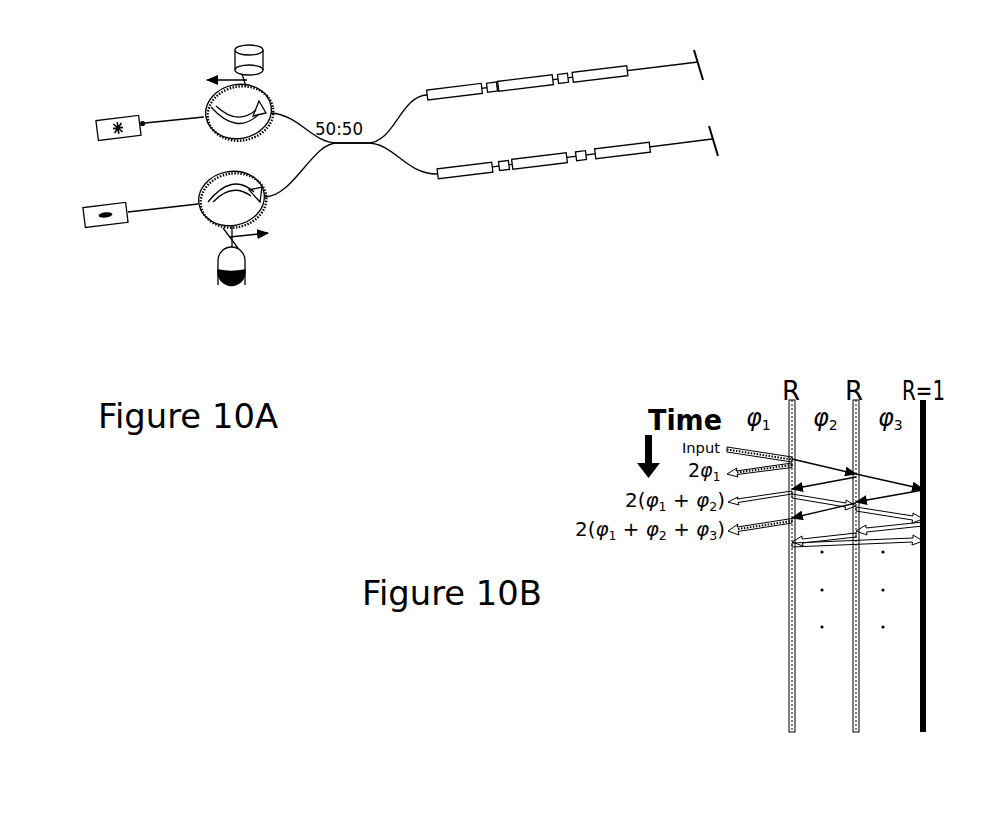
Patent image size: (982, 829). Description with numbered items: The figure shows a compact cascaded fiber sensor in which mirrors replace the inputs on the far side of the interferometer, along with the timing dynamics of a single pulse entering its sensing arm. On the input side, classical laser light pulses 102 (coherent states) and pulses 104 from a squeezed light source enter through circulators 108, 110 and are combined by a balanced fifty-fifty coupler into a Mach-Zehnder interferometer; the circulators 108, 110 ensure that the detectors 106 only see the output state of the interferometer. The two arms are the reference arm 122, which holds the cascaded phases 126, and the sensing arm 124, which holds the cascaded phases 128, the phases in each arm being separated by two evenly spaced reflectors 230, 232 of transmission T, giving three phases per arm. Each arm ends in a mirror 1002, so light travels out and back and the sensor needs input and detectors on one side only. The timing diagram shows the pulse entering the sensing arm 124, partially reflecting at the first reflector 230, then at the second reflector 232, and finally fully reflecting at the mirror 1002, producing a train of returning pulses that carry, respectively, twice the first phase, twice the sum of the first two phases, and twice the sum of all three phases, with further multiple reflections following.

In FIG. 10A, the classical laser light pulses 102 is at (108, 114).
In FIG. 10A, the squeezed light pulses 104 is at (107, 214).
In FIG. 10A, the detectors 106 is at (242, 171).
In FIG. 10A, the circulator 108 is at (259, 111).
In FIG. 10A, the circulator 110 is at (219, 212).
In FIG. 10A, the reference arm 122 is at (678, 62).
In FIG. 10A, the sensing arm 124 is at (408, 180).
In FIG. 10A, the cascaded phases 126 is at (572, 63).
In FIG. 10A, the cascaded phases 128 is at (614, 197).
In FIG. 10A, the reflectors 230 is at (503, 160).
In FIG. 10B, the reflectors 230 is at (785, 588).
In FIG. 10A, the reflector 232 is at (565, 84).
In FIG. 10B, the reflector 232 is at (858, 588).
In FIG. 10A, the mirror 1002 is at (735, 104).
In FIG. 10B, the mirror 1002 is at (931, 588).